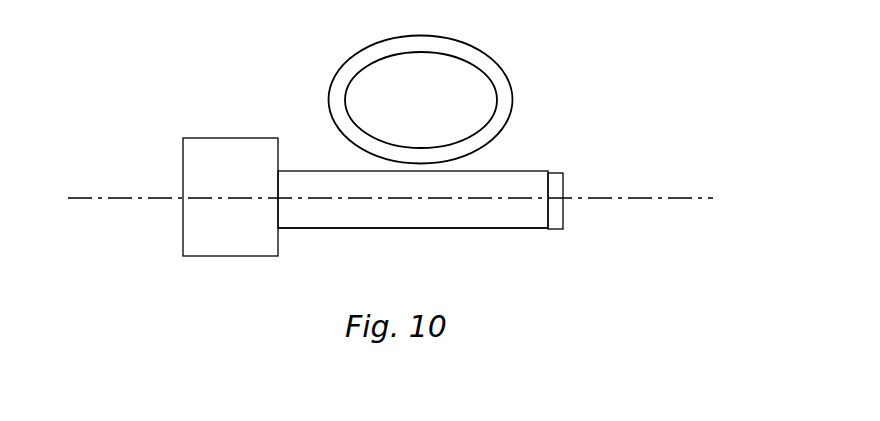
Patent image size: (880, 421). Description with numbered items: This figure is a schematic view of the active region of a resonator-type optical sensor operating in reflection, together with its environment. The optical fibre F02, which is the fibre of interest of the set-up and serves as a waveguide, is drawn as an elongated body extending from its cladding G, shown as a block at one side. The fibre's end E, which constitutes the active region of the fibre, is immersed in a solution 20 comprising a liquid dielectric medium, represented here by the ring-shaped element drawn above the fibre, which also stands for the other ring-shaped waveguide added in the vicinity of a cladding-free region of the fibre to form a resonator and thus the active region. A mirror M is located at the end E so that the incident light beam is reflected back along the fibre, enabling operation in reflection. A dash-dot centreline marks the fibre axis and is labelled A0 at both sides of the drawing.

The solution 20 is at (299, 105).
The rotation axis A0 is at (88, 188).
The cladding G is at (218, 272).
The optical fibre F02 is at (426, 240).
The end of the optical fibre E is at (537, 255).
The mirror M is at (570, 222).